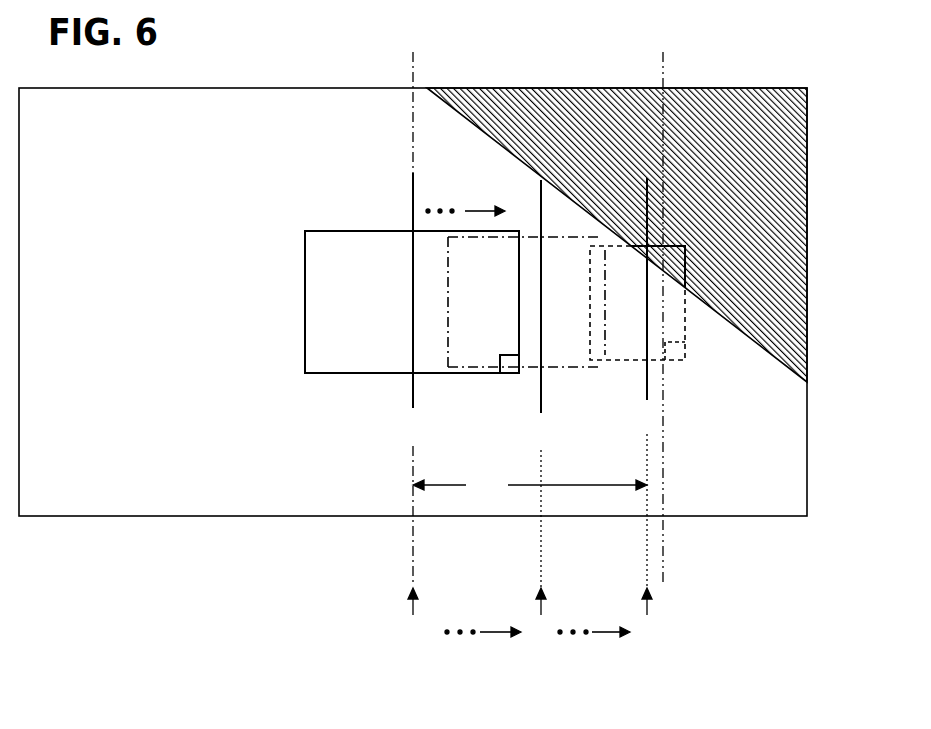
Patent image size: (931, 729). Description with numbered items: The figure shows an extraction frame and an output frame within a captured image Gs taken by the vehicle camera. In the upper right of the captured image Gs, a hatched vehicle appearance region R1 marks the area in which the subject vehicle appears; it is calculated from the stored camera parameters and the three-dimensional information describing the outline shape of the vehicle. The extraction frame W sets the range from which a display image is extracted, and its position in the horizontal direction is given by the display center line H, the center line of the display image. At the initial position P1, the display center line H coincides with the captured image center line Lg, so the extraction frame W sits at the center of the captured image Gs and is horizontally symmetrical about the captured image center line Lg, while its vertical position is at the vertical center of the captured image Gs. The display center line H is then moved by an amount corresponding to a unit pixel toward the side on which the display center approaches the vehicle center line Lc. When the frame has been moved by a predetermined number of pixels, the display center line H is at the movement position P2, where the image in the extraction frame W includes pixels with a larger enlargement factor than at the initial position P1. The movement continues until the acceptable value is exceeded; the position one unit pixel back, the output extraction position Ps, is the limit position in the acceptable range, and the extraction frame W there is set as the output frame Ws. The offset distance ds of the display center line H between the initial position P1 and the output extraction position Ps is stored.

The captured image Gs is at (123, 516).
The vehicle appearance region R1 is at (697, 90).
The captured image center line Lg is at (417, 307).
The vehicle center line Lc is at (662, 305).
The extraction frame W is at (360, 373).
The output frame Ws is at (685, 360).
The display center line H is at (530, 385).
The offset distance ds is at (530, 485).
The initial position P1 is at (410, 615).
The movement position P2 is at (498, 615).
The output extraction position Ps is at (631, 615).